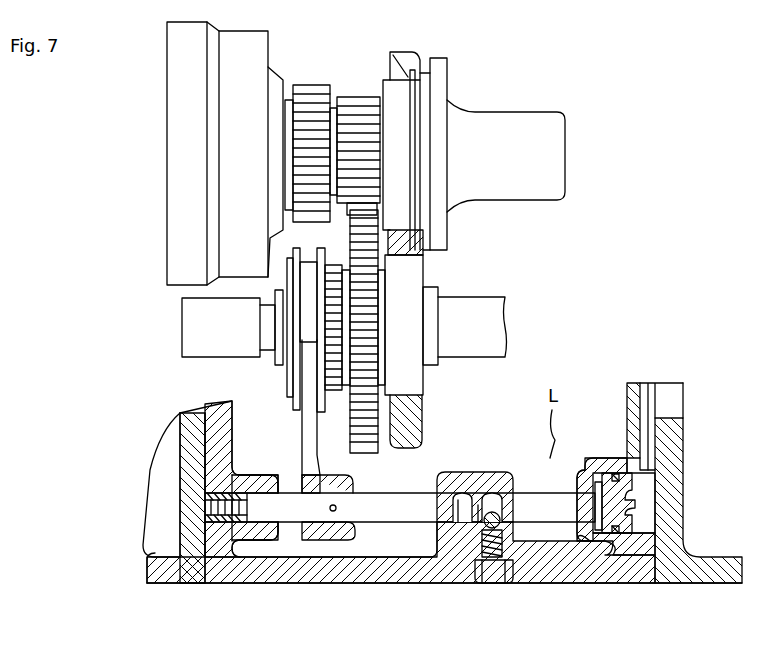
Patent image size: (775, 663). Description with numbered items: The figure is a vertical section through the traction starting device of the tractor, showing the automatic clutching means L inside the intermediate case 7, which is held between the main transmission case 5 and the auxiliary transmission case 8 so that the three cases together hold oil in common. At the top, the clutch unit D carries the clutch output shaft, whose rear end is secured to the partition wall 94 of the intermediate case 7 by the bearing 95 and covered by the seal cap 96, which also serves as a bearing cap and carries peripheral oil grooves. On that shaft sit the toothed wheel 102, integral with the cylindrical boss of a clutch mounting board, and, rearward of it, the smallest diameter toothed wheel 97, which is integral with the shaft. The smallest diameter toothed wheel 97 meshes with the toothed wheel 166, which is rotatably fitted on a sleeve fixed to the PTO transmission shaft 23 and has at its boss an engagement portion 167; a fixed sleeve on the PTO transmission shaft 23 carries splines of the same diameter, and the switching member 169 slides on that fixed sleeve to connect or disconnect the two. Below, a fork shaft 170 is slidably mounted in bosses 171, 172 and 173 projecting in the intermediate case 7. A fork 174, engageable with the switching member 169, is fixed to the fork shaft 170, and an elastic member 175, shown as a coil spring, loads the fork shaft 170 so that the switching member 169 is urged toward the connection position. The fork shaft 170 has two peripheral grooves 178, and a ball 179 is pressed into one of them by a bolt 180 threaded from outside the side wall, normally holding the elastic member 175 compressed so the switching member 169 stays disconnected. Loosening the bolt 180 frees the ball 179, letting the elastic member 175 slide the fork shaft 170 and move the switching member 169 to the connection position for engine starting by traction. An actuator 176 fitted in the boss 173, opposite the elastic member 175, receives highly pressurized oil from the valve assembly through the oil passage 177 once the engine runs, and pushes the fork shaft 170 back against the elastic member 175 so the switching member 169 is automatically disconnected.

The drive unit D is at (148, 229).
The toothed wheel 102 is at (310, 85).
The smallest diameter toothed wheel 97 is at (356, 97).
The partition wall 94 is at (410, 60).
The bearing 95 is at (442, 84).
The seal cap 96 is at (515, 125).
The PTO transmission shaft 23 is at (190, 336).
The switching member 169 is at (290, 345).
The engagement portion 167 is at (338, 384).
The toothed wheel 166 is at (365, 305).
The fork 174 is at (308, 420).
The main transmission case 5 is at (150, 565).
The intermediate case 7 is at (328, 572).
The auxiliary transmission case 8 is at (712, 565).
The oil passage 177 is at (640, 406).
The boss 173 is at (598, 466).
The actuator 176 is at (617, 503).
The fork shaft 170 is at (392, 505).
The elastic member 175 is at (205, 500).
The boss 171 is at (244, 478).
The boss 172 is at (465, 480).
The ball 179 is at (495, 508).
The peripheral grooves 178 is at (478, 515).
The bolt 180 is at (513, 590).